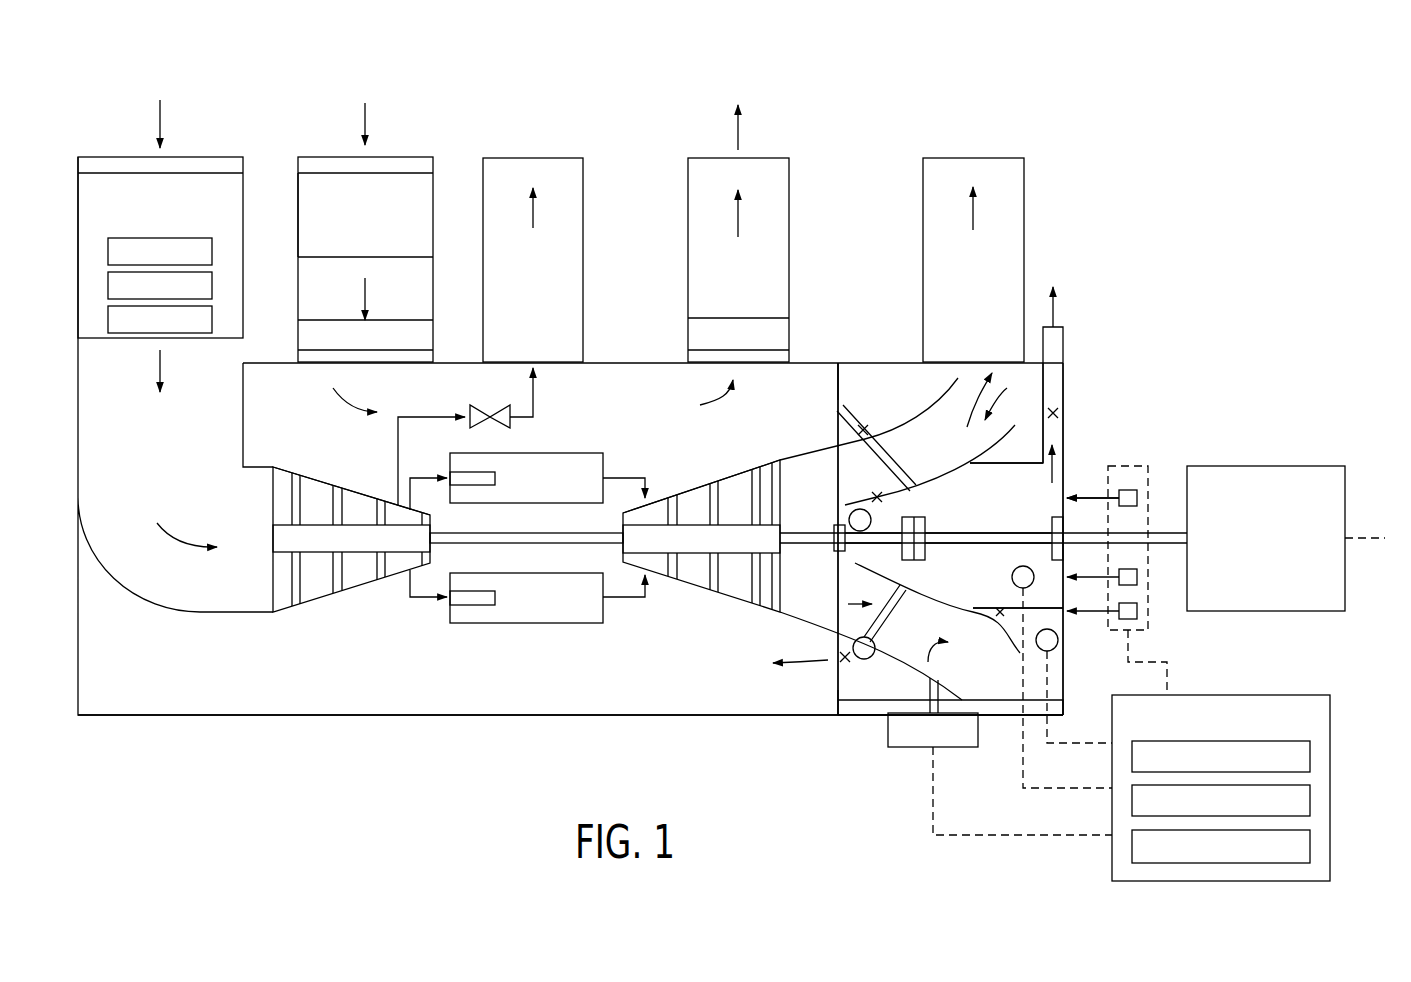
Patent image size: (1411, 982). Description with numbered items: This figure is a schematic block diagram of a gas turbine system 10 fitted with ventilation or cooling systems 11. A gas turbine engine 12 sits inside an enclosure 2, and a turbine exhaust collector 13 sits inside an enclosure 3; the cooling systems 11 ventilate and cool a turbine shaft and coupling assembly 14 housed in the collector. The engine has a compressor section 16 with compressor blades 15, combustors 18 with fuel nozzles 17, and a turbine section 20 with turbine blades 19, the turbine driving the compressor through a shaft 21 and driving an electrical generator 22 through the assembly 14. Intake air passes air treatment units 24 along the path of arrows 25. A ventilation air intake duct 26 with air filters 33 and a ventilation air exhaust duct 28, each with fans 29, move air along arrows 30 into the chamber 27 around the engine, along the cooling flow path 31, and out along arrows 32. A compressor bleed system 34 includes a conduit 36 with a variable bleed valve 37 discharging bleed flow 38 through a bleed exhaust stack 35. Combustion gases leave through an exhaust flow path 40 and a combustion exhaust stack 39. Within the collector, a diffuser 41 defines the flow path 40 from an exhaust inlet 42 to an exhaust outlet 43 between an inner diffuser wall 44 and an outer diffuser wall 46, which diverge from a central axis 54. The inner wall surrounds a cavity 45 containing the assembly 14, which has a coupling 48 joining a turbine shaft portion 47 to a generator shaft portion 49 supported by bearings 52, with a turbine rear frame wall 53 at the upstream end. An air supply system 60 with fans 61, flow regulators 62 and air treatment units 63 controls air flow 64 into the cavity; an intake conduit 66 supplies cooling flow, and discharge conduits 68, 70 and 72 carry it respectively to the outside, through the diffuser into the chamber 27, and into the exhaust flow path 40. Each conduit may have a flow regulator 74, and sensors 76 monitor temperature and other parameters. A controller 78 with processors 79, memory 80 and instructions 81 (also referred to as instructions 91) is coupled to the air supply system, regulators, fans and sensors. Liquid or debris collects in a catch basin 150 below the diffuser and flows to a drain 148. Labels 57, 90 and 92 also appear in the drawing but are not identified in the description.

The enclosure 2 is at (315, 715).
The enclosure 3 is at (887, 717).
The gas turbine system 10 is at (1153, 247).
The cooling systems 11 is at (1083, 380).
The gas turbine engine 12 is at (477, 743).
The turbine exhaust collector 13 is at (900, 773).
The turbine shaft and coupling assembly 14 is at (1005, 508).
The compressor blades 15 is at (298, 475).
The compressor section 16 is at (283, 473).
The fuel nozzles 17 is at (497, 478).
The combustors 18 is at (543, 453).
The turbine blades 19 is at (715, 487).
The turbine section 20 is at (770, 482).
The shaft 21 is at (498, 540).
The electrical generator 22 is at (1250, 466).
The air treatment units 24 is at (78, 187).
The intake air flow arrows 25 is at (160, 110).
The ventilation air intake duct 26 is at (327, 157).
The interior chamber 27 is at (653, 690).
The ventilation air exhaust duct 28 is at (772, 175).
The fans 29 is at (407, 335).
The intake flow path arrows 30 is at (365, 116).
The cooling flow path arrows 31 is at (348, 413).
The exhaust flow path arrows 32 is at (737, 140).
The air filters 33 is at (317, 232).
The compressor bleed system 34 is at (580, 380).
The compressor bleed exhaust duct 35 is at (585, 175).
The compressor bleed conduit 36 is at (438, 413).
The variable bleed valve 37 is at (480, 403).
The bleed flow arrow 38 is at (532, 218).
The combustion exhaust stack 39 is at (1007, 175).
The exhaust flow path 40 is at (972, 218).
The diffuser 41 is at (930, 397).
The exhaust inlet 42 is at (825, 612).
The exhaust outlet 43 is at (1065, 397).
The inner diffuser wall 44 is at (997, 442).
The cavity 45 is at (960, 575).
The outer diffuser wall 46 is at (907, 423).
The turbine shaft portion 47 is at (857, 547).
The coupling 48 is at (927, 523).
The generator shaft portion 49 is at (997, 535).
The bearings 52 is at (1065, 548).
The turbine rear frame wall 53 is at (832, 604).
The central axis 54 is at (1350, 545).
The coupling 57 is at (832, 527).
The air supply system 60 is at (1128, 462).
The fans 61 is at (1137, 495).
The flow regulators 62 is at (1137, 575).
The air treatment units 63 is at (1137, 610).
The air flow arrows 64 is at (1105, 498).
The intake flow conduit 66 is at (975, 608).
The discharge flow conduit 68 is at (1065, 342).
The discharge flow conduit 70 is at (850, 420).
The discharge flow conduit 72 is at (880, 497).
The flow regulator 74 is at (1063, 413).
The sensors 76 is at (1062, 648).
The controller 78 is at (1240, 695).
The processors 79 is at (1310, 757).
The memory 80 is at (1310, 800).
The instructions 81 is at (1310, 845).
The partition wall 90 is at (838, 378).
The instructions 91 is at (838, 722).
The partition wall upper end 92 is at (843, 368).
The drain 148 is at (967, 747).
The catch basin 150 is at (938, 710).